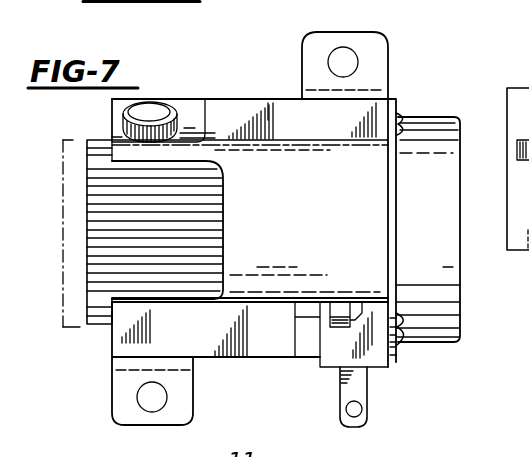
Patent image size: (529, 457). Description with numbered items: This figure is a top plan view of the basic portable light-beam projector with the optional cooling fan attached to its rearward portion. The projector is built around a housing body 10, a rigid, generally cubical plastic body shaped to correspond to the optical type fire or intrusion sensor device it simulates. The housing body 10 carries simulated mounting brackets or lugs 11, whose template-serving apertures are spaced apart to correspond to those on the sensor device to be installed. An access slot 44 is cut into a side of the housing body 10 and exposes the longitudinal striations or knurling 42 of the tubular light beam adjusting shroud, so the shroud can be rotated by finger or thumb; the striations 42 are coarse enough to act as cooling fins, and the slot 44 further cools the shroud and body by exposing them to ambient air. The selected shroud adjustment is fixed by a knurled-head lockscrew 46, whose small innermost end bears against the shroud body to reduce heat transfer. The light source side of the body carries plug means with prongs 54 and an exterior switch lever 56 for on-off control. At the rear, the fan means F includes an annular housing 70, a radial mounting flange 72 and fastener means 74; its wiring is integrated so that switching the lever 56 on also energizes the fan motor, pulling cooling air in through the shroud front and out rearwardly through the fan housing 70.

The housing body 10 is at (235, 357).
The simulated mounting brackets or lugs 11 is at (382, 45).
The longitudinal striations or knurling 42 is at (100, 278).
The access slot 44 is at (135, 302).
The knurled-head lockscrew 46 is at (155, 108).
The prongs 54 is at (367, 415).
The exterior switch lever 56 is at (522, 140).
The annular housing 70 is at (438, 127).
The radial mounting flange 72 is at (393, 355).
The fastener means 74 is at (398, 117).
The fan means F is at (457, 344).